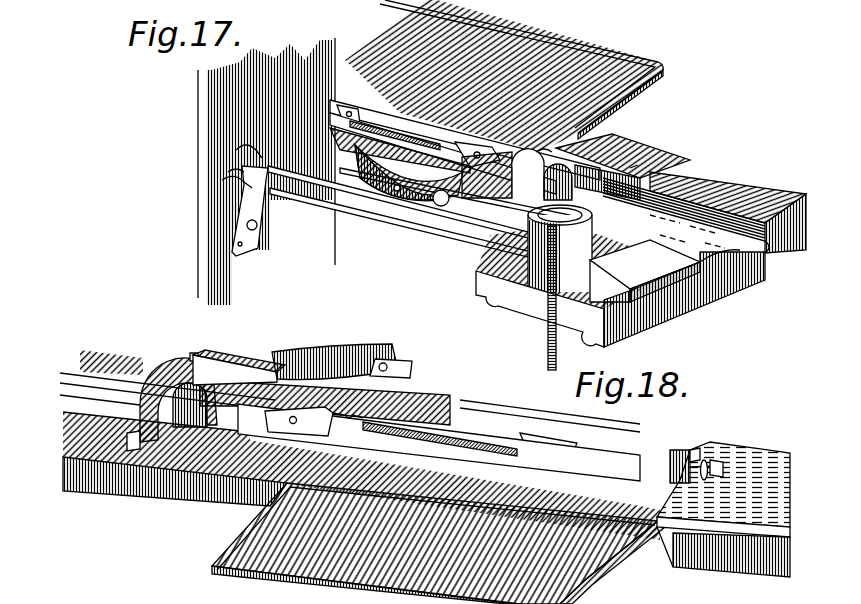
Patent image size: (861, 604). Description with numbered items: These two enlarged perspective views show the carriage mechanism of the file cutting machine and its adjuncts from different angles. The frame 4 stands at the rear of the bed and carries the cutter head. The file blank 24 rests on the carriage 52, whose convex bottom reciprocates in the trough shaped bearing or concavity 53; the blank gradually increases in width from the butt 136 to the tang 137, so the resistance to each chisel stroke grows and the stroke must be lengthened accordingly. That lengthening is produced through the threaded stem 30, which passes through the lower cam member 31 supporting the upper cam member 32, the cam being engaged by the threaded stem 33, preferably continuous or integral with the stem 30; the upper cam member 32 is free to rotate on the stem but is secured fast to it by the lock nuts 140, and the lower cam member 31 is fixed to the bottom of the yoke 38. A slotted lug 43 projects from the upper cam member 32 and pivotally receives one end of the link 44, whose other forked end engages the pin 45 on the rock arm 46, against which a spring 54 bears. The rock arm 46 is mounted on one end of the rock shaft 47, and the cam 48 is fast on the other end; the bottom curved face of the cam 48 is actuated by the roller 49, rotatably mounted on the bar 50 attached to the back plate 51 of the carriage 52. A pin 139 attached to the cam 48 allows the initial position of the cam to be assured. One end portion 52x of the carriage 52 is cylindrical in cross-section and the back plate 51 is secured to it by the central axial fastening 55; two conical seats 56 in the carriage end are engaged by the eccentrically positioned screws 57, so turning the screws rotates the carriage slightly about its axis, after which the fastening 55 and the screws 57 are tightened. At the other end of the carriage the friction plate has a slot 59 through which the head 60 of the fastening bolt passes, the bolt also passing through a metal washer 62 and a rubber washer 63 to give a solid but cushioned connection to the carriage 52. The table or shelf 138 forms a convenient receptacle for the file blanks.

In FIG. 17, the frame 4 is at (197, 196).
In FIG. 17, the file blank 24 is at (432, 138).
In FIG. 18, the file blank 24 is at (366, 463).
In FIG. 17, the threaded stem 30 is at (547, 358).
In FIG. 17, the lower cam member 31 is at (476, 274).
In FIG. 17, the upper cam member 32 is at (645, 263).
In FIG. 17, the threaded stem 33 is at (495, 238).
In FIG. 17, the yoke 38 is at (571, 267).
In FIG. 17, the slotted lug 43 is at (545, 265).
In FIG. 17, the link 44 is at (368, 198).
In FIG. 17, the pin 45 is at (235, 181).
In FIG. 17, the rock arm 46 is at (284, 214).
In FIG. 17, the rock shaft 47 is at (280, 240).
In FIG. 18, the rock shaft 47 is at (392, 370).
In FIG. 17, the cam 48 is at (405, 197).
In FIG. 18, the cam 48 is at (333, 366).
In FIG. 17, the roller 49 is at (451, 209).
In FIG. 18, the roller 49 is at (290, 355).
In FIG. 17, the bar 50 is at (489, 175).
In FIG. 18, the bar 50 is at (260, 357).
In FIG. 17, the back plate 51 is at (628, 150).
In FIG. 18, the back plate 51 is at (126, 440).
In FIG. 17, the carriage 52 is at (520, 158).
In FIG. 17, the end portion of the carriage 52x is at (548, 152).
In FIG. 18, the end portion of the carriage 52x is at (205, 380).
In FIG. 17, the trough shaped bearing 53 is at (764, 252).
In FIG. 18, the trough shaped bearing 53 is at (167, 391).
In FIG. 17, the spring 54 is at (642, 171).
In FIG. 18, the spring 54 is at (361, 476).
In FIG. 18, the central axial fastening 55 is at (123, 390).
In FIG. 17, the conical seats 56 is at (255, 162).
In FIG. 18, the screws 57 is at (165, 380).
In FIG. 18, the slot 59 is at (711, 478).
In FIG. 18, the head 60 is at (723, 468).
In FIG. 18, the metal washer 62 is at (693, 450).
In FIG. 18, the rubber washer 63 is at (677, 452).
In FIG. 17, the butt 136 is at (377, 110).
In FIG. 18, the butt 136 is at (497, 462).
In FIG. 17, the tang 137 is at (468, 147).
In FIG. 18, the tang 137 is at (332, 440).
In FIG. 17, the table or shelf 138 is at (504, 76).
In FIG. 18, the table or shelf 138 is at (438, 543).
In FIG. 17, the pin 139 is at (396, 195).
In FIG. 17, the lock nuts 140 is at (688, 170).